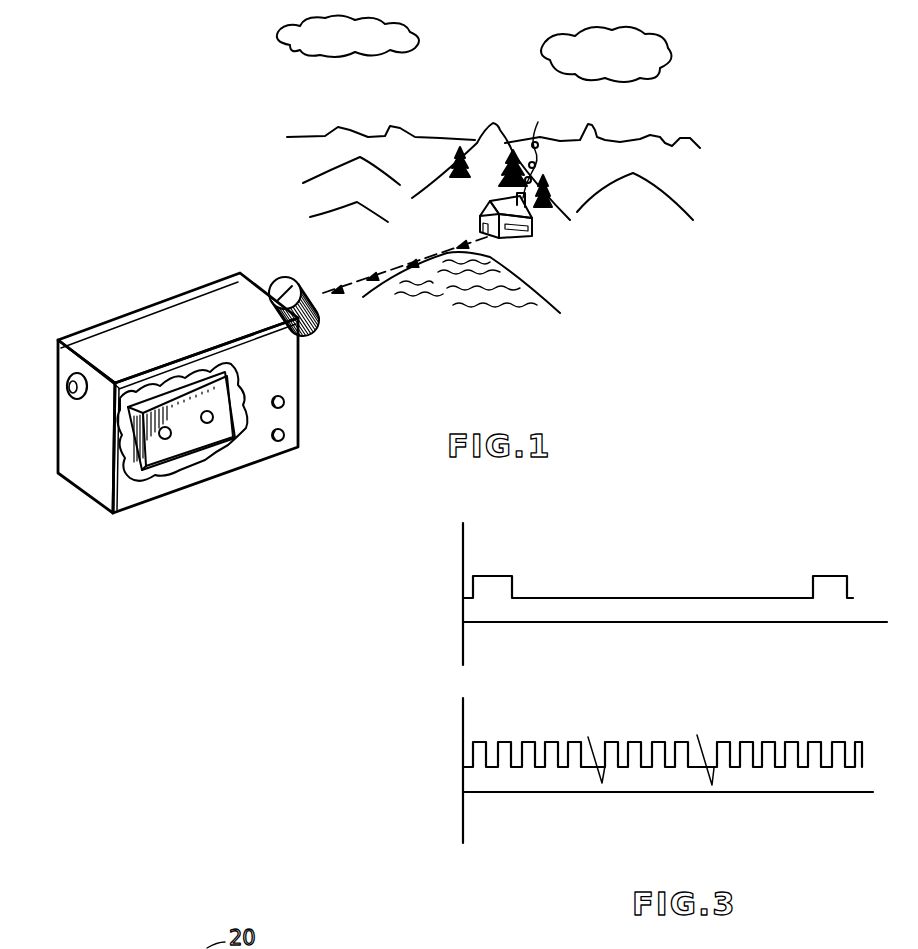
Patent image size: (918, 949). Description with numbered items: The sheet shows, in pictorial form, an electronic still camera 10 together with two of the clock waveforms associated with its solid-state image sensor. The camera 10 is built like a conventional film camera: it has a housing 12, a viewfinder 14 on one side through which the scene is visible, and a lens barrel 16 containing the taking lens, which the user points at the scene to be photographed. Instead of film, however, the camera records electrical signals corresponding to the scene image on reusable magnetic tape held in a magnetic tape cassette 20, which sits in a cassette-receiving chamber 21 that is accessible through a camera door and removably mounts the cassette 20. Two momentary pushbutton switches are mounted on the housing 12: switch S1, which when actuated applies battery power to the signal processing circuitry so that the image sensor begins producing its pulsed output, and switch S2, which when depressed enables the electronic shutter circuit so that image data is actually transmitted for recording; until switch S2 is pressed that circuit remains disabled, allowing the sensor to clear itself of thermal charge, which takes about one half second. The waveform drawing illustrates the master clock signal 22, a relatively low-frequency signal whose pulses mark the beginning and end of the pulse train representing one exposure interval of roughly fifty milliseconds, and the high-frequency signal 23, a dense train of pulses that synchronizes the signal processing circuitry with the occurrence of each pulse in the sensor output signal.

In FIG. 1, the electronic still camera 10 is at (202, 407).
In FIG. 1, the housing 12 is at (220, 293).
In FIG. 1, the viewfinder 14 is at (73, 399).
In FIG. 1, the lens barrel 16 is at (322, 312).
In FIG. 1, the magnetic tape cassette 20 is at (177, 447).
In FIG. 1, the cassette-receiving chamber 21 is at (147, 490).
In FIG. 1, the pushbutton switch S1 is at (287, 403).
In FIG. 1, the pushbutton switch S2 is at (290, 447).
In FIG. 3, the master clock signal waveform 22 is at (834, 559).
In FIG. 3, the high-frequency synchronizing waveform 23 is at (833, 736).